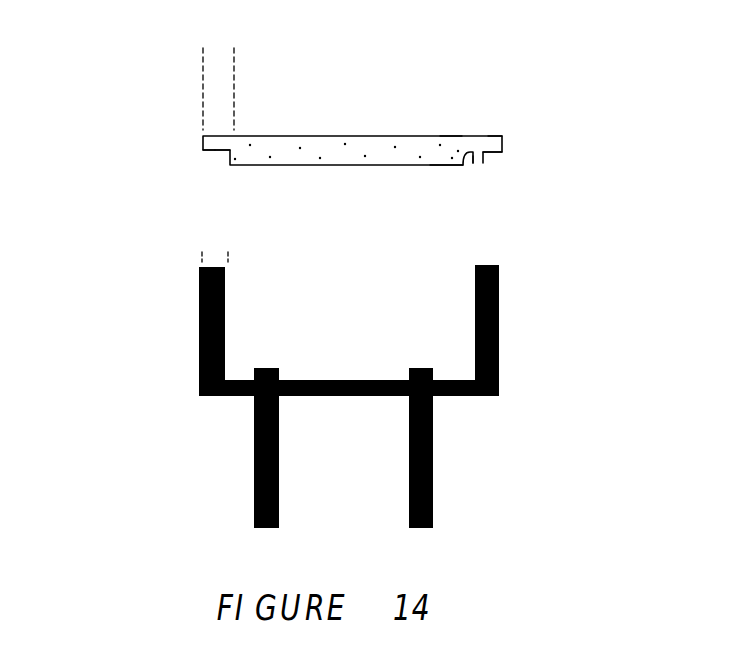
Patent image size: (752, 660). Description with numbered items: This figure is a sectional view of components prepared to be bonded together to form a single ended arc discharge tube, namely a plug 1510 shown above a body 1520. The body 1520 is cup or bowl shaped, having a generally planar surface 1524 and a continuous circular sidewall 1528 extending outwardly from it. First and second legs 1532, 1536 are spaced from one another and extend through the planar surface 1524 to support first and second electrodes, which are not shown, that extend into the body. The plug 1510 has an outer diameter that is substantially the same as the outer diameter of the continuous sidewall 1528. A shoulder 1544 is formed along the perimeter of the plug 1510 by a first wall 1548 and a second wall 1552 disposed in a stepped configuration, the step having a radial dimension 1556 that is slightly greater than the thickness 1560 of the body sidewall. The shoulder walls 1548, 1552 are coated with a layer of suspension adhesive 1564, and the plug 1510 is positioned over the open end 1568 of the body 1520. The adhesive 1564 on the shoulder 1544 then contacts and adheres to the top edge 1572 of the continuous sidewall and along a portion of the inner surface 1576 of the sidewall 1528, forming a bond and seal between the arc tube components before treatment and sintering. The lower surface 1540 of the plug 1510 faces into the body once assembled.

The plug 1510 is at (350, 136).
The radial dimension 1556 is at (239, 62).
The second wall 1552 is at (468, 72).
The first wall 1548 is at (493, 136).
The shoulder 1544 is at (488, 161).
The layer of suspension adhesive 1564 is at (478, 163).
The plate bottom surface 1540 is at (444, 166).
The thickness 1560 is at (175, 237).
The body 1520 is at (199, 375).
The planar surface 1524 is at (460, 396).
The continuous circular sidewall 1528 is at (498, 334).
The open end 1568 is at (413, 270).
The top edge 1572 is at (492, 265).
The side wall inner surface 1576 is at (475, 273).
The first leg 1532 is at (252, 495).
The second leg 1536 is at (435, 492).